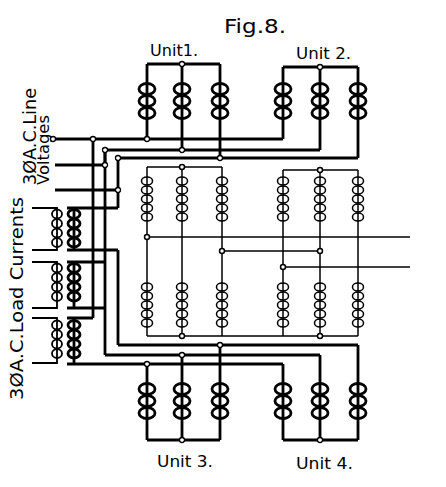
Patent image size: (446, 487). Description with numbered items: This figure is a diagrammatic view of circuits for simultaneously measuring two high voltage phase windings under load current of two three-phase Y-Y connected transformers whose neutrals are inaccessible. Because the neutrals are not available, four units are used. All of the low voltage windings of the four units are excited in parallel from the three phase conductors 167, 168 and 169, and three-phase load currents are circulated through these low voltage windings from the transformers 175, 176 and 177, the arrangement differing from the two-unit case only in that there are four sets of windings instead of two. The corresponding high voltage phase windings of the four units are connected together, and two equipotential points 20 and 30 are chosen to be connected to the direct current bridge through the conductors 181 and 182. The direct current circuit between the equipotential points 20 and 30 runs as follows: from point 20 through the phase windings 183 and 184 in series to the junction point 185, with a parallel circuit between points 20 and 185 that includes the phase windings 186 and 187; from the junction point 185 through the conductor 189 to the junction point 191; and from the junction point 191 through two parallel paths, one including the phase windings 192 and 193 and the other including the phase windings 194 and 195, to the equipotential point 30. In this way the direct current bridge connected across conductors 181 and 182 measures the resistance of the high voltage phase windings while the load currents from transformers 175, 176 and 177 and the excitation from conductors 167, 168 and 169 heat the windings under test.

The equipotential point 20 is at (145, 238).
The equipotential point 30 is at (281, 266).
The phase conductor 167 is at (88, 137).
The phase conductor 168 is at (88, 163).
The phase conductor 169 is at (88, 190).
The transformer 175 is at (55, 233).
The transformer 176 is at (55, 289).
The transformer 177 is at (55, 344).
The conductor 181 is at (386, 235).
The conductor 182 is at (386, 267).
The phase winding 183 is at (146, 204).
The phase winding 184 is at (228, 203).
The junction point 185 is at (221, 252).
The phase winding 186 is at (146, 287).
The phase winding 187 is at (229, 303).
The conductor 189 is at (262, 250).
The junction point 191 is at (333, 254).
The phase winding 192 is at (320, 208).
The phase winding 193 is at (279, 183).
The phase winding 194 is at (324, 294).
The phase winding 195 is at (280, 307).